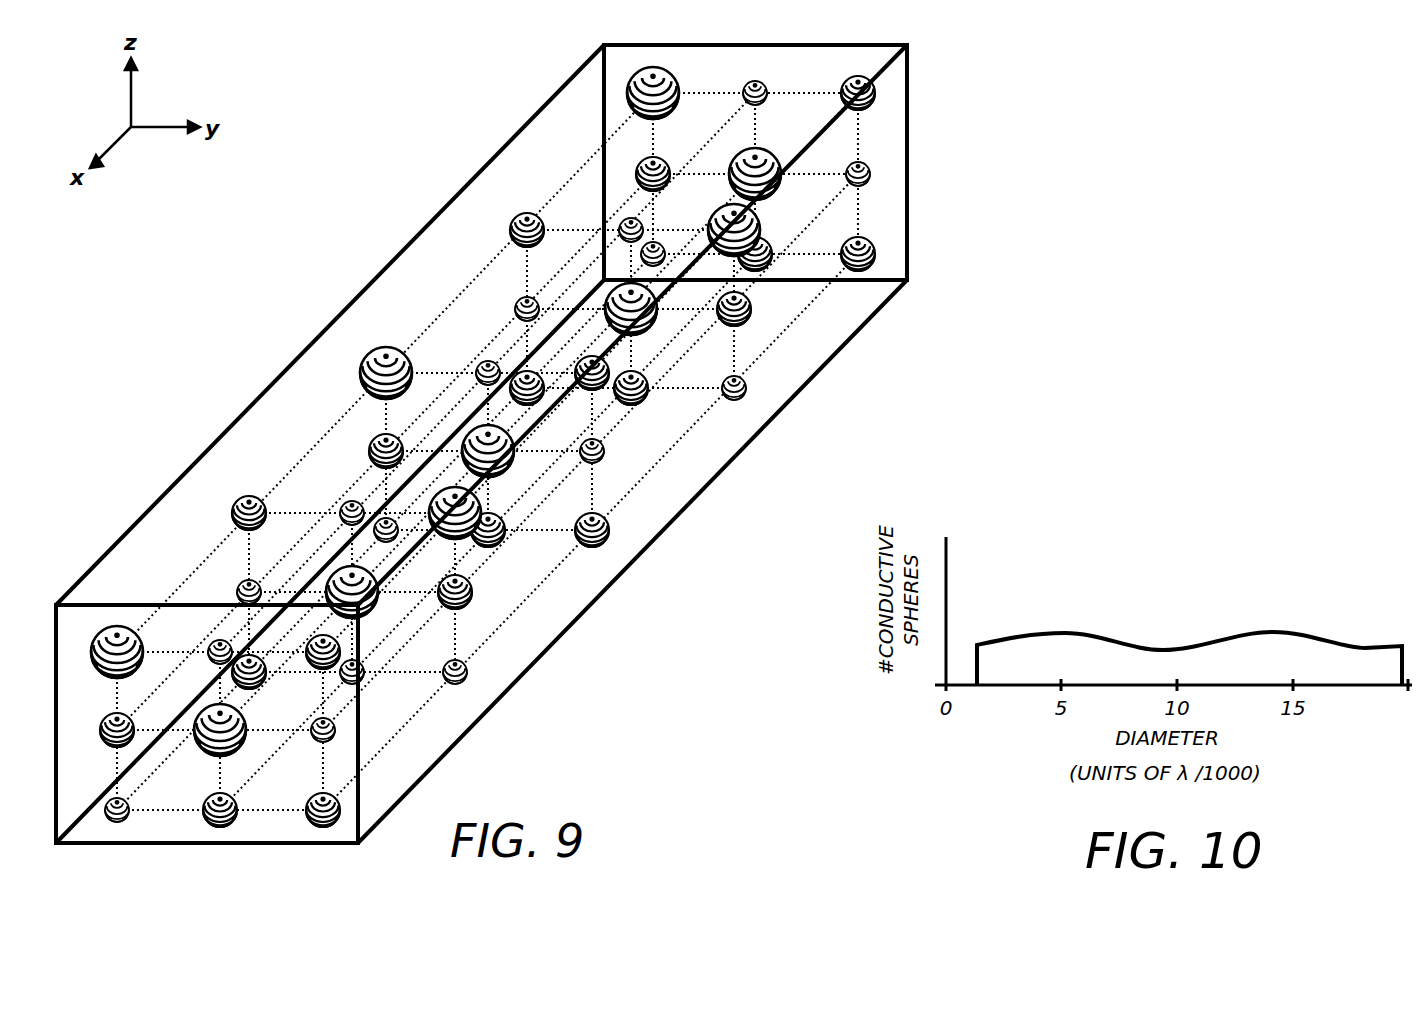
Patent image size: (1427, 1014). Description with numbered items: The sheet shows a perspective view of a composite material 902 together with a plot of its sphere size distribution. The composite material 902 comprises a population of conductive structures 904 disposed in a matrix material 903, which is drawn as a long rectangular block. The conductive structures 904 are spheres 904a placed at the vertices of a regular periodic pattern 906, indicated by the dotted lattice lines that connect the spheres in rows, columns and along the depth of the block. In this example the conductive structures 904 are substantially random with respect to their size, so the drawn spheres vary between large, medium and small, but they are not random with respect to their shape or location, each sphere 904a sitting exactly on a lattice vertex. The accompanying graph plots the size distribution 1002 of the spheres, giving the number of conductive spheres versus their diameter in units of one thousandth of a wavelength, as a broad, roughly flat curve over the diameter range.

In FIG. 9, the composite material 902 is at (207, 387).
In FIG. 9, the matrix material 903 is at (526, 126).
In FIG. 9, the conductive structures 904 is at (384, 348).
In FIG. 9, the spheres 904a is at (598, 548).
In FIG. 9, the regular periodic pattern 906 is at (652, 474).
In FIG. 10, the size distribution 1002 is at (1127, 638).